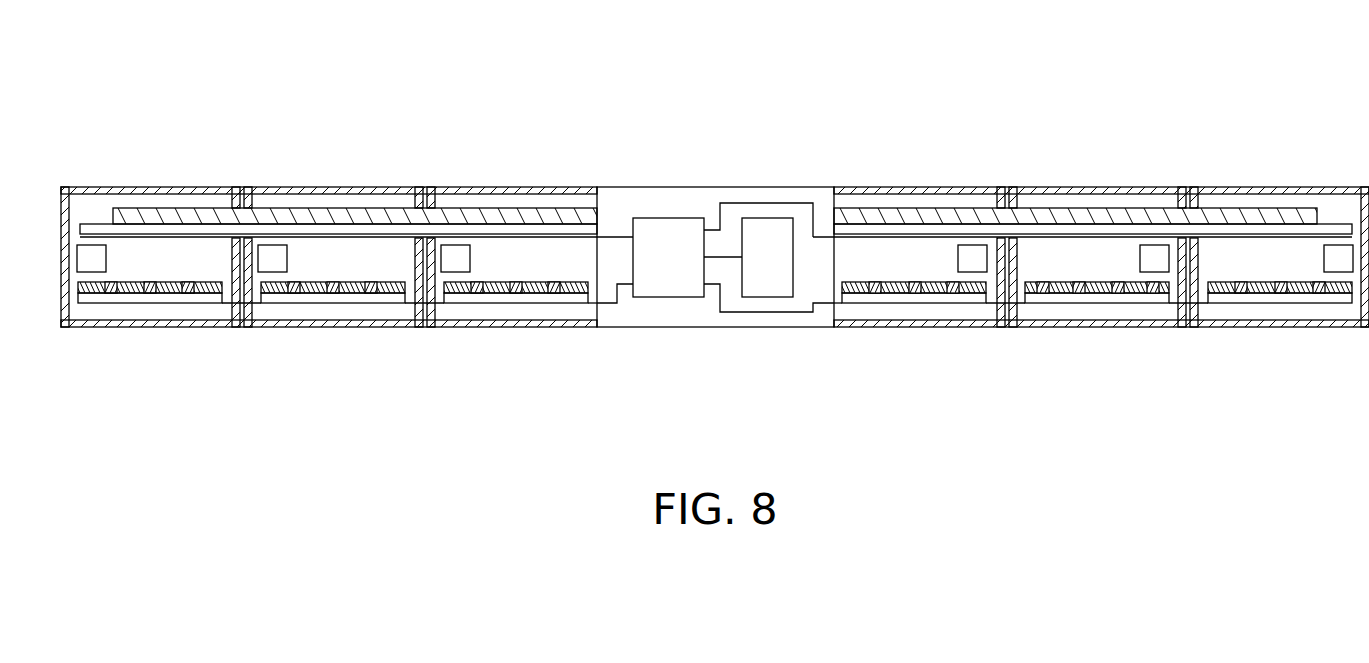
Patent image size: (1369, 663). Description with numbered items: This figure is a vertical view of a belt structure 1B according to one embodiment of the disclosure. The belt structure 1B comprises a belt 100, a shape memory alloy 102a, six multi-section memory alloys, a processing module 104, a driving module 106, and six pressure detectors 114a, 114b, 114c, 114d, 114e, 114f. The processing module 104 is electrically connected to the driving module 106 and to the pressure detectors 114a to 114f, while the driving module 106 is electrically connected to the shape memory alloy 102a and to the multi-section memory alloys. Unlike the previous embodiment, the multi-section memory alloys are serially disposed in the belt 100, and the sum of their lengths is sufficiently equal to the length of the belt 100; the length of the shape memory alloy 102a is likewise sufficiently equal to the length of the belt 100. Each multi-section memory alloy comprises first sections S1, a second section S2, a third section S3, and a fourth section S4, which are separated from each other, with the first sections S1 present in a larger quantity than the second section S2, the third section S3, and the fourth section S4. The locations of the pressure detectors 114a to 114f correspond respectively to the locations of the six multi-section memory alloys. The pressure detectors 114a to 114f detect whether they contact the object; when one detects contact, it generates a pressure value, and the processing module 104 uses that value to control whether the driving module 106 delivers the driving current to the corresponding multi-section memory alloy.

The belt structure 1B is at (1060, 43).
The belt 100 is at (1050, 190).
The shape memory alloy 102a is at (1228, 215).
The processing module 104 is at (767, 237).
The driving module 106 is at (670, 238).
The pressure detector 114a is at (455, 257).
The pressure detector 114b is at (272, 257).
The pressure detector 114c is at (90, 257).
The pressure detector 114d is at (973, 257).
The pressure detector 114e is at (1153, 257).
The pressure detector 114f is at (1338, 257).
The first sections S1 is at (1042, 290).
The second section S2 is at (875, 291).
The third section S3 is at (916, 291).
The fourth section S4 is at (954, 291).